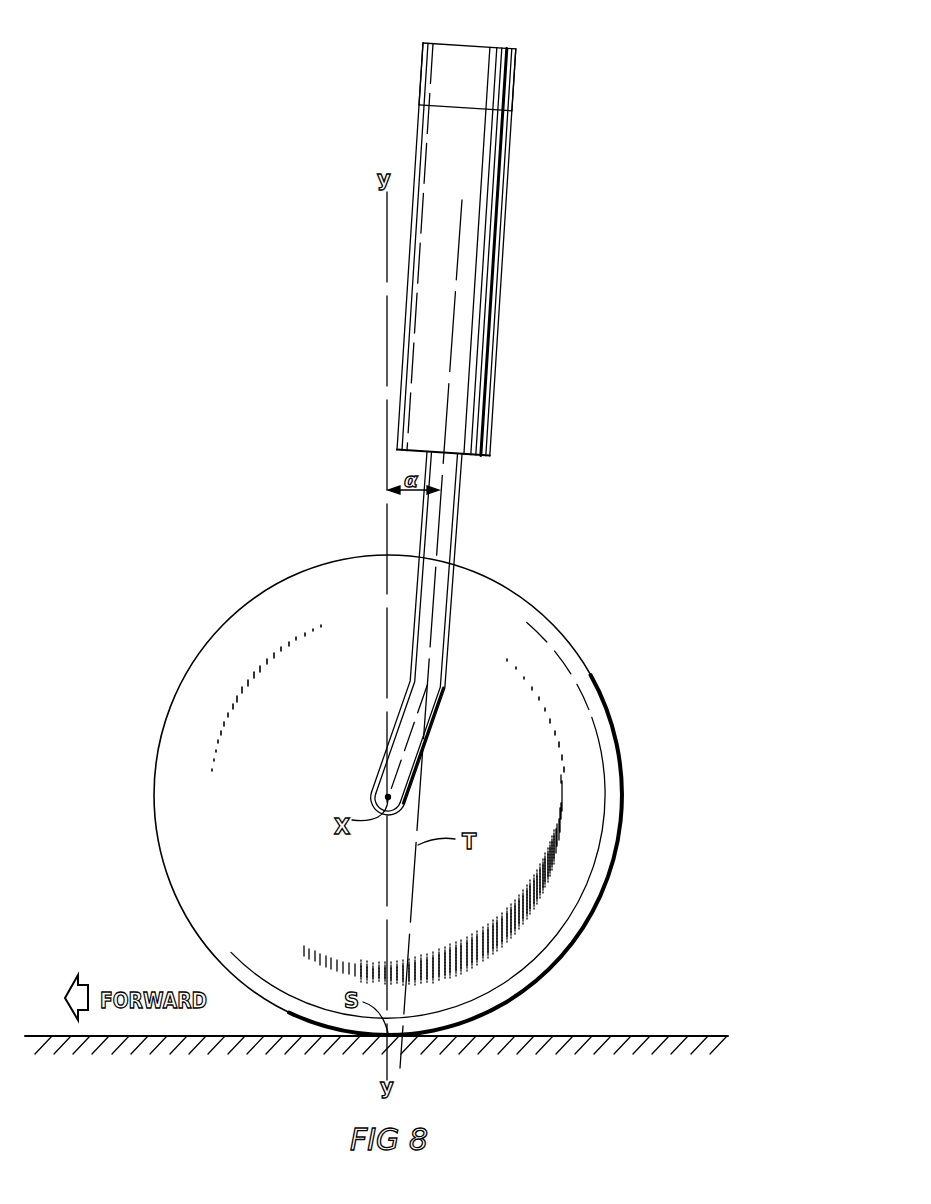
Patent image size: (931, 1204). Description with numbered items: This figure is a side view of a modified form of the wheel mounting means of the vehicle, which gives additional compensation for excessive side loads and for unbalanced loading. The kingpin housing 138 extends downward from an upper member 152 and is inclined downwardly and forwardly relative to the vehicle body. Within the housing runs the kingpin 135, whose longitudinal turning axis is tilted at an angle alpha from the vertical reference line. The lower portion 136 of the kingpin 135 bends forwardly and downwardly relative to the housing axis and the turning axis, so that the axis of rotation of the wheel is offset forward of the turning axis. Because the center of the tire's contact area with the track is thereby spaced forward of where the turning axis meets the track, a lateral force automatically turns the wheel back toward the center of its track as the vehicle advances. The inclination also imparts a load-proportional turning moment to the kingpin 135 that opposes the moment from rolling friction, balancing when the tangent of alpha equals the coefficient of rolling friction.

The upper steering tube / handlebar stem 152 is at (515, 78).
The kingpin housing 138 is at (507, 242).
The kingpin 135 is at (466, 531).
The lower portion of the kingpin 136 is at (435, 722).